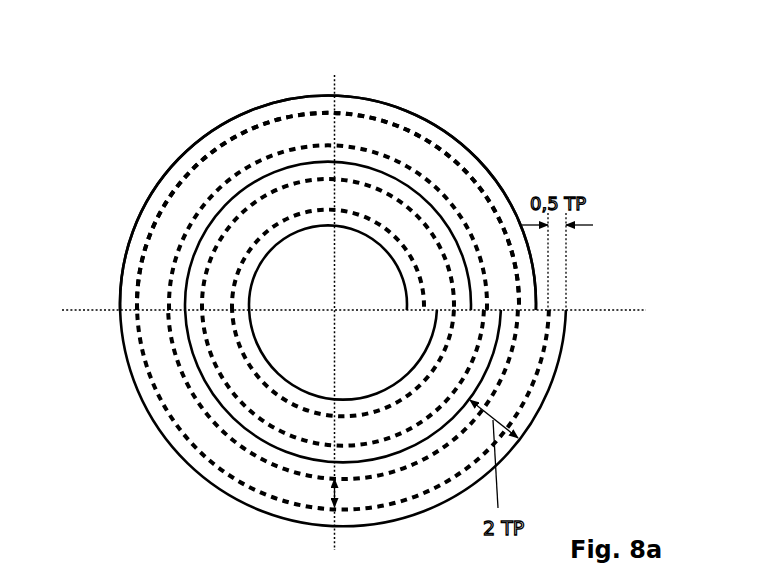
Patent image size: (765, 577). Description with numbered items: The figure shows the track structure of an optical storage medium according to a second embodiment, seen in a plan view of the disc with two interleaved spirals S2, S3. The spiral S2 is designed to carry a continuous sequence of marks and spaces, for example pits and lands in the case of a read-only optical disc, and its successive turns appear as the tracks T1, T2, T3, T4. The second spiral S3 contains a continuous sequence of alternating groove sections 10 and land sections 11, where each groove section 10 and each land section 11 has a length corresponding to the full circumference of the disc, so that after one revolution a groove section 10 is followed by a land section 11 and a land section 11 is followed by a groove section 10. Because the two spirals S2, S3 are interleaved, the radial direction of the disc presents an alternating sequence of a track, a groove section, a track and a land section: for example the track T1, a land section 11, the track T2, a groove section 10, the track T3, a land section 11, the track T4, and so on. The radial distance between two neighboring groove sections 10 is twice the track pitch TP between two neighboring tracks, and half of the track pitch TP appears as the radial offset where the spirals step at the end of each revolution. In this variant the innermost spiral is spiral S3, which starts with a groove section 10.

The groove section 10 is at (257, 353).
The land section 11 is at (250, 472).
The track T1 is at (410, 250).
The track T2 is at (218, 238).
The track T3 is at (203, 413).
The track T4 is at (198, 165).
The spiral S2 is at (433, 145).
The spiral S3 is at (478, 158).
The track pitch TP is at (337, 492).